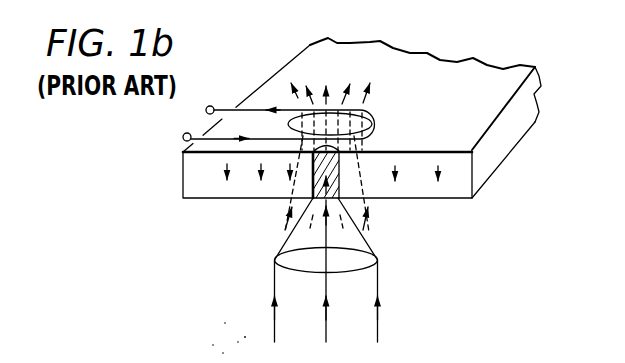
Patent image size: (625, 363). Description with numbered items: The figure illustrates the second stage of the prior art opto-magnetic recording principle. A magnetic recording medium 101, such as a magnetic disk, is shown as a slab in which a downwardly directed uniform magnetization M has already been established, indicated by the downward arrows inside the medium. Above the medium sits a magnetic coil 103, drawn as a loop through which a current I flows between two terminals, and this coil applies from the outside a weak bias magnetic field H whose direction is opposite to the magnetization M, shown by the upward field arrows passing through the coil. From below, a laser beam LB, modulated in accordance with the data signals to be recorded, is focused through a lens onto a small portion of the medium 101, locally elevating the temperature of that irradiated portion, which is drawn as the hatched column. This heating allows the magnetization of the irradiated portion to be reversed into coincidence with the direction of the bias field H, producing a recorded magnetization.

The magnetic recording medium 101 is at (522, 122).
The magnetic coil 103 is at (373, 118).
The magnetization M is at (346, 172).
The bias magnetic field H is at (337, 157).
The coil current I is at (278, 115).
The laser beam LB is at (338, 270).